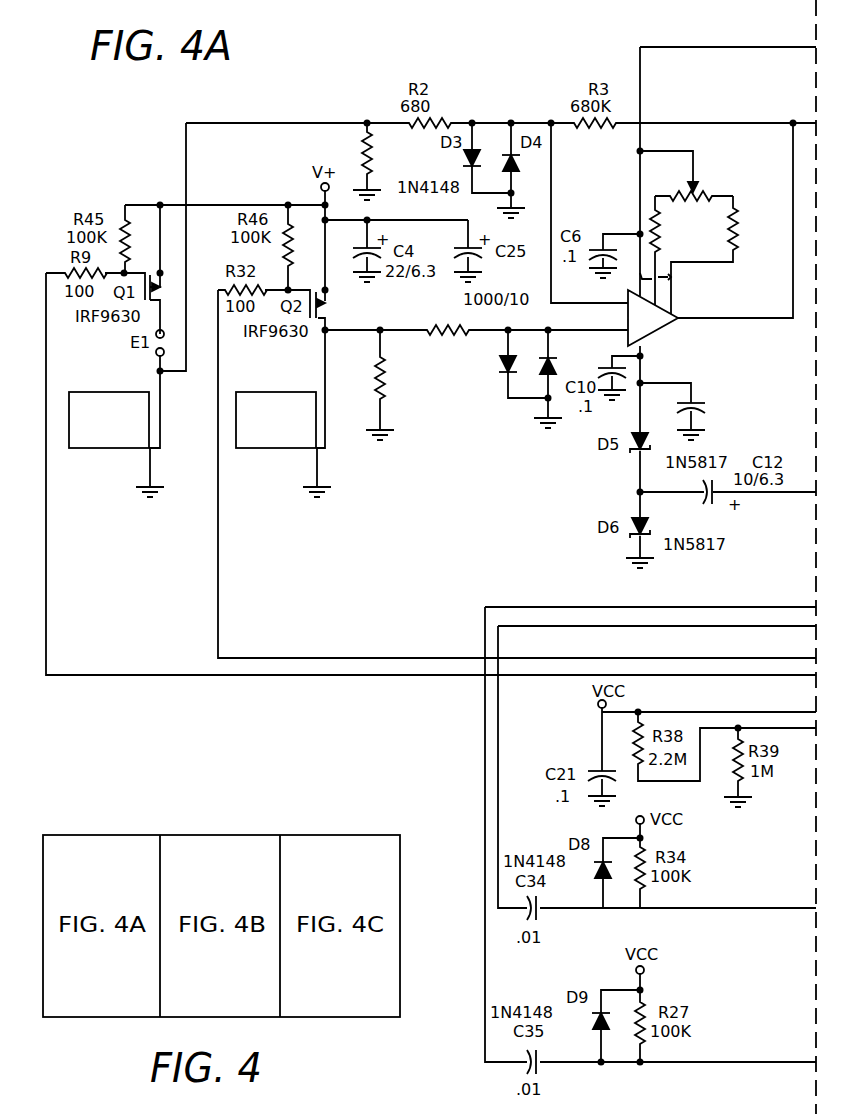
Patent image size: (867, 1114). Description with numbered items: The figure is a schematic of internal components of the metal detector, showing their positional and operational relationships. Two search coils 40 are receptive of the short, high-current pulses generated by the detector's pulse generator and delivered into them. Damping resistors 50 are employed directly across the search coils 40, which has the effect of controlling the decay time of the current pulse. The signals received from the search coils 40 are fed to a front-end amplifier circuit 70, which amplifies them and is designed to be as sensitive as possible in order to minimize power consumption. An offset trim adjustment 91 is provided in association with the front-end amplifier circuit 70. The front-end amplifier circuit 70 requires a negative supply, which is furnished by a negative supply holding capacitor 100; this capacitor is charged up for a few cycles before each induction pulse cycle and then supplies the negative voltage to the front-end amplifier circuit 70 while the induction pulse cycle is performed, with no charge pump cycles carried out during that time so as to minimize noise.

The search coil 40 is at (247, 470).
The damping resistor 50 is at (442, 425).
The offset trim adjustment 91 is at (738, 192).
The front-end amplifier circuit 70 is at (682, 319).
The negative supply holding capacitor 100 is at (715, 410).